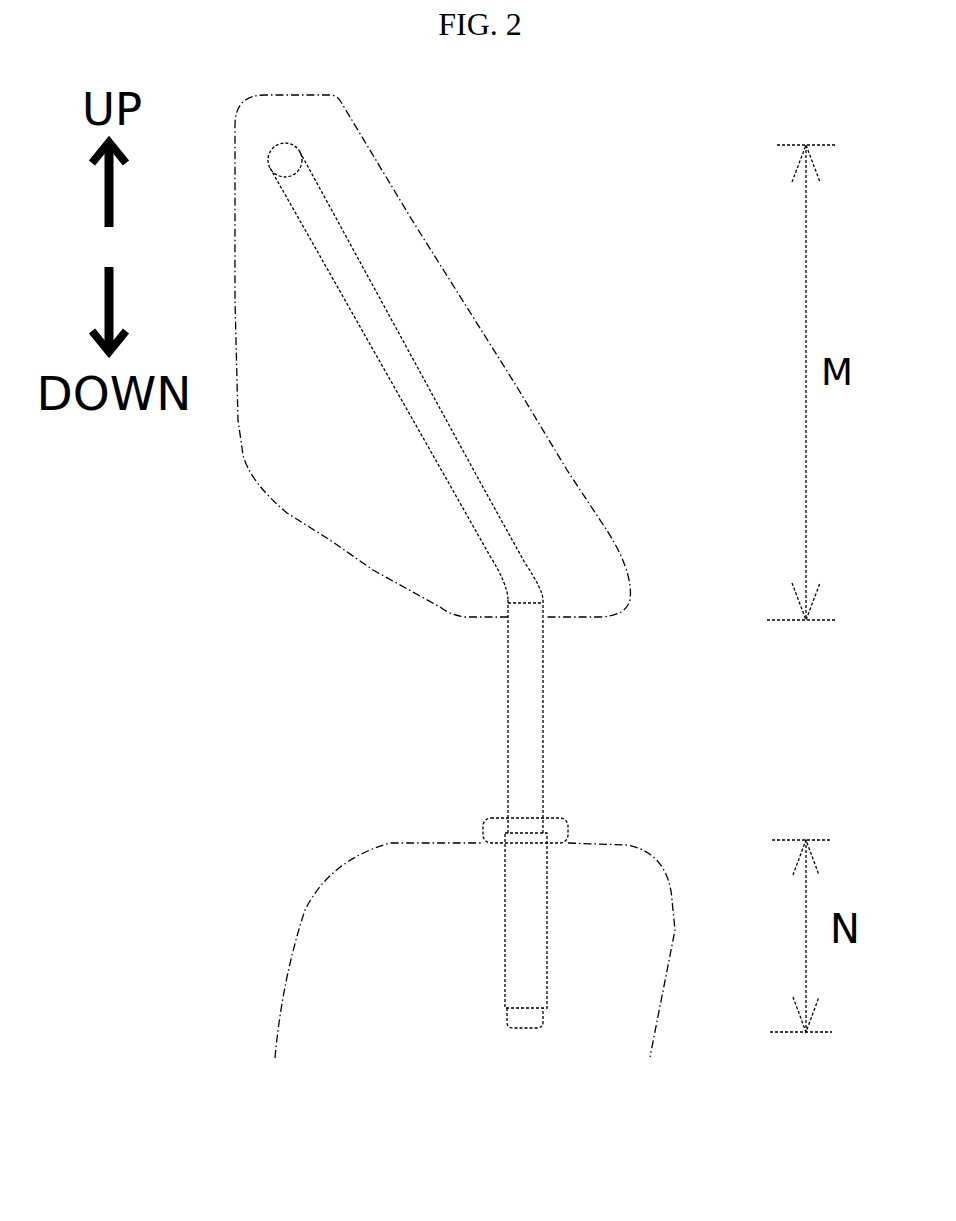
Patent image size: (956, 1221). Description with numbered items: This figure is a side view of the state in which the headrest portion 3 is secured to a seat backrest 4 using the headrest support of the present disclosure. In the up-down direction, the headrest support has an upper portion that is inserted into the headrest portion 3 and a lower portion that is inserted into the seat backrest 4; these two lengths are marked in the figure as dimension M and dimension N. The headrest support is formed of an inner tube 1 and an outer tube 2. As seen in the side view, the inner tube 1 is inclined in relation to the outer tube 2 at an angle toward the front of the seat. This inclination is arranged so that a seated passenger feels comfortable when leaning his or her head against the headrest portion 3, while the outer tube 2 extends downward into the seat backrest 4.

The inner tube 1 is at (447, 452).
The outer tube 2 is at (528, 747).
The headrest portion 3 is at (422, 253).
The seat backrest 4 is at (617, 860).